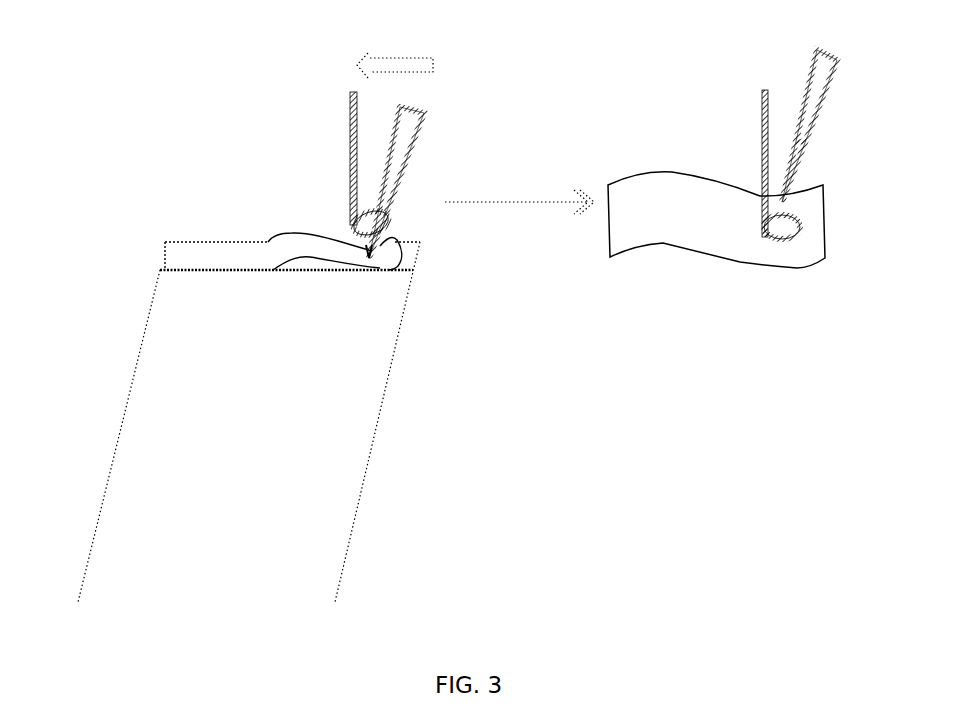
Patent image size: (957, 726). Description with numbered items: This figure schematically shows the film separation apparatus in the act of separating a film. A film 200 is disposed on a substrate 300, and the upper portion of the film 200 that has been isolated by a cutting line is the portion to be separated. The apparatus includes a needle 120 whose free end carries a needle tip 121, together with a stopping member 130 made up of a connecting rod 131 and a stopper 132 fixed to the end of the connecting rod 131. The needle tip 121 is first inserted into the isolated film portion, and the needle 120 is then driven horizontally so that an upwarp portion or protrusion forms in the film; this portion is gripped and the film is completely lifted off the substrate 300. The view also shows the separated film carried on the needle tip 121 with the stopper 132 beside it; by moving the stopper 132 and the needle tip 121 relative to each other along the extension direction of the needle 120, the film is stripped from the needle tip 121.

The needle 120 is at (397, 163).
The needle tip 121 is at (380, 210).
The stopping member 130 is at (143, 85).
The connecting rod 131 is at (348, 193).
The stopper 132 is at (363, 240).
The film 200 is at (322, 445).
The substrate 300 is at (328, 480).